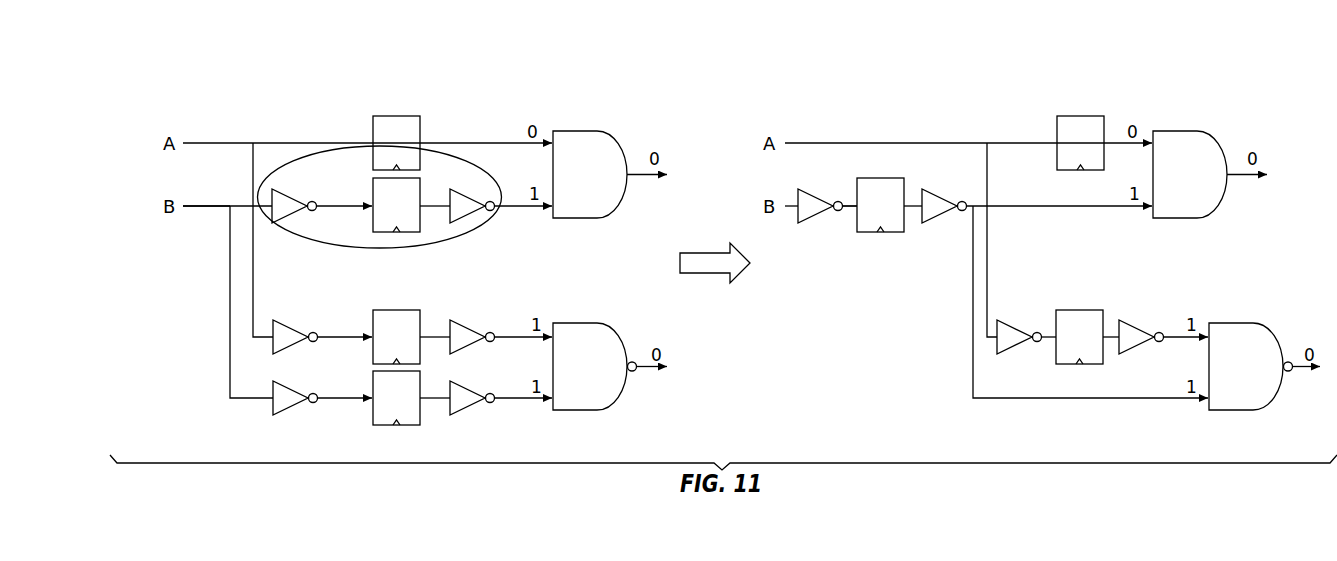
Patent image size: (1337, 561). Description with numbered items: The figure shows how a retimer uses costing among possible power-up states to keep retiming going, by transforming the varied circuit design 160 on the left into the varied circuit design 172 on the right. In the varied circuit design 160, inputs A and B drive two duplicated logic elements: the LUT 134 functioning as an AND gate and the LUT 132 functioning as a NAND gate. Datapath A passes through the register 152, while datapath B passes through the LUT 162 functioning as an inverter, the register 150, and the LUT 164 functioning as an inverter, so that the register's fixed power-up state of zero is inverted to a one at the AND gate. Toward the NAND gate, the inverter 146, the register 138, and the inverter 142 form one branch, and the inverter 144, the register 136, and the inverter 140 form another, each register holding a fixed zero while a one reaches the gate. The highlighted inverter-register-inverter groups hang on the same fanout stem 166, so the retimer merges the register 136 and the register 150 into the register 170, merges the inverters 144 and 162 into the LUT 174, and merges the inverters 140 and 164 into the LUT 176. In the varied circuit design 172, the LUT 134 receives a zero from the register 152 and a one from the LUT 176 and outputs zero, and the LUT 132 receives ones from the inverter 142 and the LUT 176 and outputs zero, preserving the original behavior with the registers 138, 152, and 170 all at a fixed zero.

The varied circuit design 160 is at (181, 99).
The varied circuit design 172 is at (834, 98).
The fanout stem 166 is at (218, 205).
The LUT functioning as an inverter 162 is at (282, 190).
The LUT functioning as an inverter 164 is at (466, 215).
The register 150 is at (397, 233).
The register 152 is at (396, 116).
The LUT functioning as an AND gate 134 is at (580, 131).
The inverter 146 is at (283, 325).
The inverter 144 is at (283, 386).
The register 138 is at (397, 310).
The register 136 is at (397, 425).
The inverter 142 is at (461, 325).
The inverter 140 is at (461, 386).
The LUT functioning as a NAND gate 132 is at (580, 323).
The LUT functioning as an inverter 174 is at (806, 190).
The LUT functioning as an inverter 176 is at (939, 196).
The register 170 is at (880, 232).